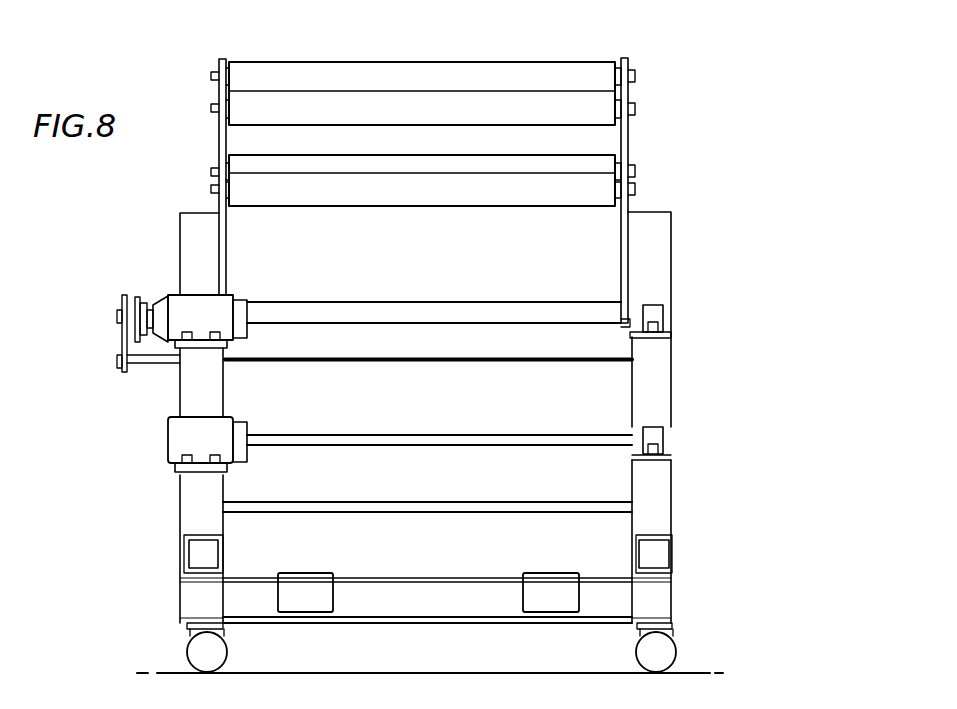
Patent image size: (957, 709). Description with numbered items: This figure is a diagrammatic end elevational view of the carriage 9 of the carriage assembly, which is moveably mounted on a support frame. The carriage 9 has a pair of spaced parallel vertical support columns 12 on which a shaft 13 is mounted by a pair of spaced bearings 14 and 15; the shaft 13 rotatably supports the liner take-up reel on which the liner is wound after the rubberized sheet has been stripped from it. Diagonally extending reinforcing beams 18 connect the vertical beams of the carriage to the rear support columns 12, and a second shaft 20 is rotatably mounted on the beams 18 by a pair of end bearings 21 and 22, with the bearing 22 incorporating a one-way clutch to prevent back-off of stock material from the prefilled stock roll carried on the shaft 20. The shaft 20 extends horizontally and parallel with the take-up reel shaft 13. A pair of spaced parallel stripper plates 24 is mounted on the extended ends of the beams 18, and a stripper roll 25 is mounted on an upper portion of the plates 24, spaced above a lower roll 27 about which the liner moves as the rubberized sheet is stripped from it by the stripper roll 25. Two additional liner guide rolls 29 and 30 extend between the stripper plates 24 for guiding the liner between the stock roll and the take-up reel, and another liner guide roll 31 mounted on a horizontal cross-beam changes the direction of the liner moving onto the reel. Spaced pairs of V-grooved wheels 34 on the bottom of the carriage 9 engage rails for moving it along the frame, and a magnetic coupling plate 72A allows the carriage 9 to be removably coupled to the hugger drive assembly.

The carriage 9 is at (688, 330).
The vertical support column 12 is at (200, 511).
The shaft 13 is at (420, 440).
The bearing 14 is at (663, 437).
The bearing 15 is at (188, 432).
The reinforcing beam 18 is at (210, 395).
The second shaft 20 is at (466, 312).
The end bearing 21 is at (650, 307).
The end bearing 22 is at (208, 305).
The stripper plate 24 is at (216, 140).
The stripper roll 25 is at (519, 75).
The lower roll 27 is at (371, 189).
The liner guide roll 29 is at (546, 105).
The liner guide roll 30 is at (336, 165).
The liner guide roll 31 is at (553, 507).
The V-grooved wheel 34 is at (195, 650).
The magnetic coupling plate 72A is at (308, 590).